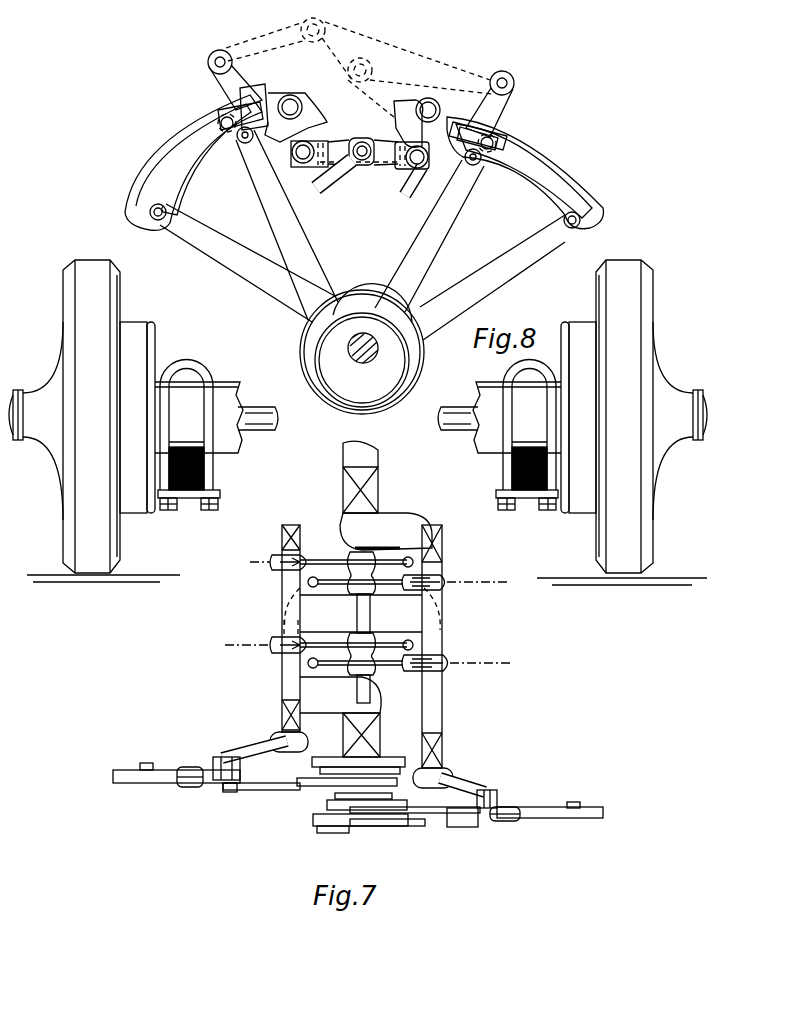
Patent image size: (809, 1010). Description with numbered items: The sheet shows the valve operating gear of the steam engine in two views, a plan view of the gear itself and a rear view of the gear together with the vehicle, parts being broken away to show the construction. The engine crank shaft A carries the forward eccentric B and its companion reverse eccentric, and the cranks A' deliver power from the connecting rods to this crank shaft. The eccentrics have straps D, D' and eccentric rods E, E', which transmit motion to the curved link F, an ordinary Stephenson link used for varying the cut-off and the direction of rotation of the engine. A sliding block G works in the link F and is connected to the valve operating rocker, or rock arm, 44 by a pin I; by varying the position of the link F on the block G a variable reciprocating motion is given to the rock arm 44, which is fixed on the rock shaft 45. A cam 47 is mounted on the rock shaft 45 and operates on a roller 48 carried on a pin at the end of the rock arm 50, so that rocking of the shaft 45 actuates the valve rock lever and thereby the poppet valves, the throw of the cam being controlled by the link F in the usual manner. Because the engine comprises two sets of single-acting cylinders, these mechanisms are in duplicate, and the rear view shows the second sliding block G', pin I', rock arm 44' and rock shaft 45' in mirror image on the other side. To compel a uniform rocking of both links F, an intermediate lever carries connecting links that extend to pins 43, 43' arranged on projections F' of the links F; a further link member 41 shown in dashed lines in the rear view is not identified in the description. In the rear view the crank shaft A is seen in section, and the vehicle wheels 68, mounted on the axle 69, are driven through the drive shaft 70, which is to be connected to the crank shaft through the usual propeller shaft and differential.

In FIG. 8, the link 41 is at (368, 66).
In FIG. 8, the pin 43 is at (509, 100).
In FIG. 7, the pin 43 is at (505, 831).
In FIG. 8, the lever 43' is at (214, 90).
In FIG. 7, the lever 43' is at (185, 798).
In FIG. 7, the valve operating rocker 44 is at (479, 777).
In FIG. 7, the connecting link 44' is at (254, 744).
In FIG. 8, the rock shaft 45 is at (430, 101).
In FIG. 7, the rock shaft 45 is at (456, 656).
In FIG. 8, the pivot post 45' is at (296, 110).
In FIG. 7, the pivot post 45' is at (268, 638).
In FIG. 8, the cam 47 is at (428, 150).
In FIG. 7, the cam 47 is at (459, 581).
In FIG. 8, the roller 48 is at (300, 164).
In FIG. 8, the rock arm 50 is at (325, 197).
In FIG. 7, the rock arm 50 is at (372, 676).
In FIG. 8, the vehicle wheels 68 is at (63, 318).
In FIG. 8, the axle 69 is at (162, 382).
In FIG. 8, the drive shaft 70 is at (258, 428).
In FIG. 8, the engine crank shaft A is at (340, 349).
In FIG. 7, the engine crank shaft A is at (388, 495).
In FIG. 7, the cranks A' is at (340, 717).
In FIG. 7, the forward eccentric B is at (325, 833).
In FIG. 7, the eccentric strap D is at (343, 832).
In FIG. 7, the eccentric strap D' is at (341, 810).
In FIG. 8, the eccentric rod E is at (360, 223).
In FIG. 7, the eccentric rod E is at (414, 834).
In FIG. 8, the eccentric rod E' is at (362, 272).
In FIG. 7, the eccentric rod E' is at (415, 833).
In FIG. 8, the link F is at (526, 173).
In FIG. 7, the link F is at (550, 830).
In FIG. 8, the projection F' is at (193, 162).
In FIG. 7, the projection F' is at (206, 788).
In FIG. 8, the sliding block G is at (511, 137).
In FIG. 8, the link G' is at (211, 117).
In FIG. 8, the pin I is at (500, 131).
In FIG. 7, the pin I is at (502, 792).
In FIG. 7, the block I' is at (206, 754).